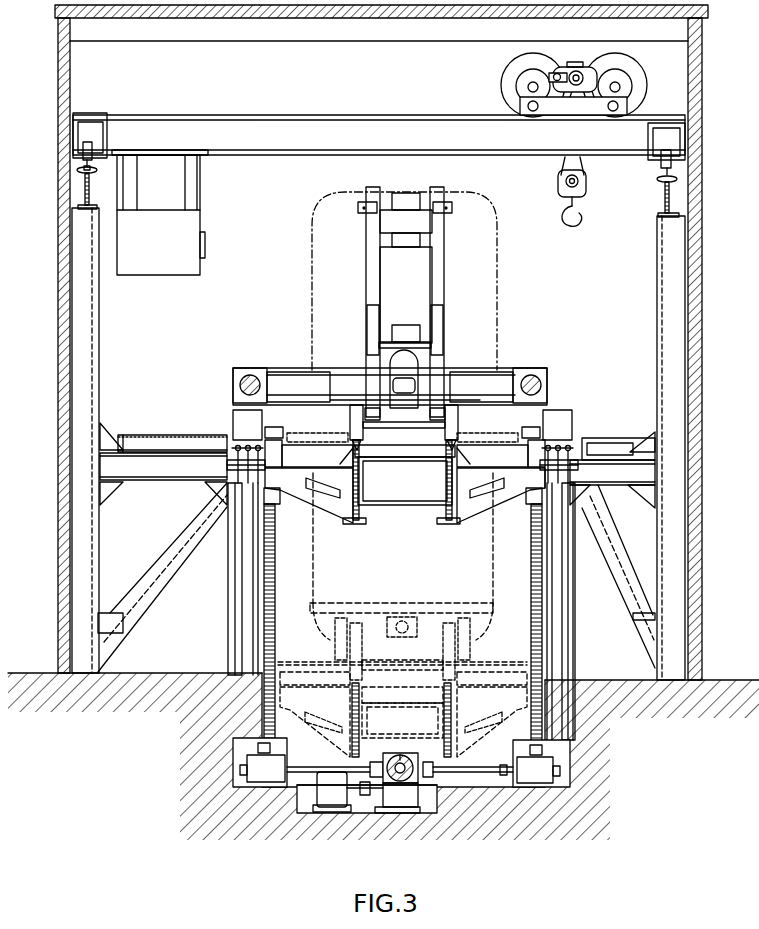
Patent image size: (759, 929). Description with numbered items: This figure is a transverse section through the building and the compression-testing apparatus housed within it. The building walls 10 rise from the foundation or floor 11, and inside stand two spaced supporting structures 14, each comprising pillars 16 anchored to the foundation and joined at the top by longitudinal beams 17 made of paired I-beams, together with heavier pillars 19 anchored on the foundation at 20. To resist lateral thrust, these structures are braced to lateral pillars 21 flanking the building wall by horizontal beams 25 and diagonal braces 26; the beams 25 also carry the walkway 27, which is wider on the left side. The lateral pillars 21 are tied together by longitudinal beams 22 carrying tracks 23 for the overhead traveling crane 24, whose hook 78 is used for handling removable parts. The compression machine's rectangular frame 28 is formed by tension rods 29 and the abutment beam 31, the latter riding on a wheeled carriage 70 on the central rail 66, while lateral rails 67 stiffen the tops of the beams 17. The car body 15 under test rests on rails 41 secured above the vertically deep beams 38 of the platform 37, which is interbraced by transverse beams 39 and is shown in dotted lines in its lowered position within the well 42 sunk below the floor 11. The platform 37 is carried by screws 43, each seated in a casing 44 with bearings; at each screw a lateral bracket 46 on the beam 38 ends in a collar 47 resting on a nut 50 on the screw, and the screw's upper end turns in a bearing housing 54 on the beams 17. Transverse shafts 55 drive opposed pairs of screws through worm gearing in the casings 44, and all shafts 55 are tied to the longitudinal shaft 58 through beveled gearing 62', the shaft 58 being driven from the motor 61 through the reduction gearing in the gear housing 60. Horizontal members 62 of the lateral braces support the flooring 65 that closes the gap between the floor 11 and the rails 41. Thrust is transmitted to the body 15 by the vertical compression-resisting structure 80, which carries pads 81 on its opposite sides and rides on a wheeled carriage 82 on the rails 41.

The walls 10 is at (58, 497).
The foundation or floor 11 is at (161, 676).
The supporting structures 14 is at (228, 612).
The rail car body 15 is at (497, 303).
The pillars 16 is at (573, 574).
The longitudinal beams 17 is at (228, 467).
The pillars 19 is at (230, 637).
The anchorage 20 is at (190, 738).
The lateral pillars 21 is at (99, 332).
The longitudinal beams 22 is at (89, 193).
The tracks 23 is at (92, 169).
The overhead traveling crane 24 is at (522, 160).
The horizontal beams 25 is at (168, 474).
The diagonal braces 26 is at (160, 565).
The walkway 27 is at (179, 437).
The rectangular frame 28 is at (262, 366).
The tension rods 29 is at (239, 386).
The abutment beam 31 is at (520, 368).
The platform 37 is at (450, 522).
The vertically deep beams 38 is at (359, 505).
The transverse beams 39 is at (405, 481).
The rails 41 is at (405, 440).
The well 42 is at (478, 783).
The screws 43 is at (275, 597).
The casing 44 is at (287, 751).
The lateral bracket 46 is at (300, 496).
The collar 47 is at (535, 490).
The nut 50 is at (280, 504).
The bearing housing 54 is at (277, 466).
The shafts 55 is at (345, 768).
The longitudinal shaft 58 is at (400, 776).
The gear housing 60 is at (392, 797).
The motor 61 is at (325, 790).
The horizontal member 62 is at (408, 458).
The beveled gearing 62' is at (409, 738).
The flooring 65 is at (350, 421).
The central rail 66 is at (265, 432).
The lateral rails 67 is at (236, 440).
The wheeled carriage 70 is at (575, 415).
The hook 78 is at (579, 216).
The vertical compression-resisting structure 80 is at (447, 289).
The pads 81 is at (407, 198).
The wheeled carriage 82 is at (447, 410).